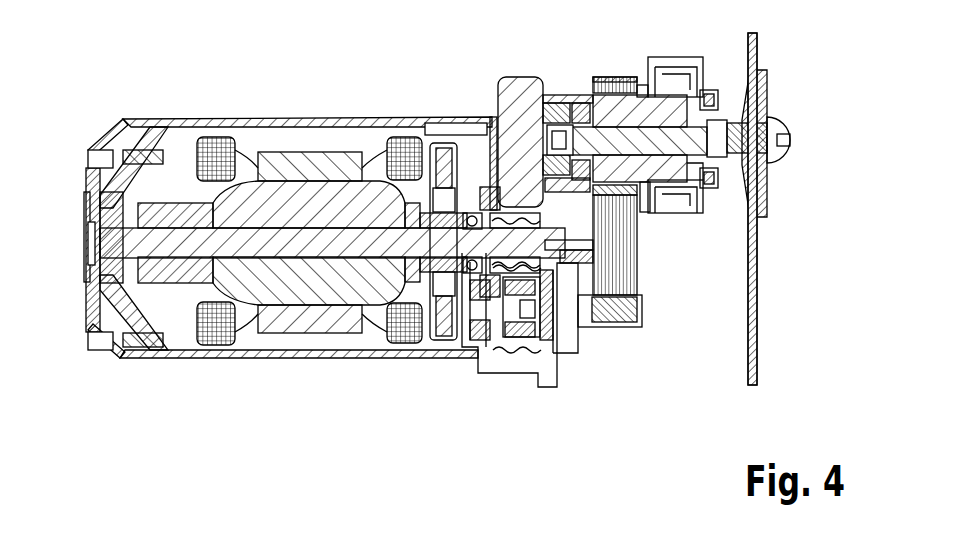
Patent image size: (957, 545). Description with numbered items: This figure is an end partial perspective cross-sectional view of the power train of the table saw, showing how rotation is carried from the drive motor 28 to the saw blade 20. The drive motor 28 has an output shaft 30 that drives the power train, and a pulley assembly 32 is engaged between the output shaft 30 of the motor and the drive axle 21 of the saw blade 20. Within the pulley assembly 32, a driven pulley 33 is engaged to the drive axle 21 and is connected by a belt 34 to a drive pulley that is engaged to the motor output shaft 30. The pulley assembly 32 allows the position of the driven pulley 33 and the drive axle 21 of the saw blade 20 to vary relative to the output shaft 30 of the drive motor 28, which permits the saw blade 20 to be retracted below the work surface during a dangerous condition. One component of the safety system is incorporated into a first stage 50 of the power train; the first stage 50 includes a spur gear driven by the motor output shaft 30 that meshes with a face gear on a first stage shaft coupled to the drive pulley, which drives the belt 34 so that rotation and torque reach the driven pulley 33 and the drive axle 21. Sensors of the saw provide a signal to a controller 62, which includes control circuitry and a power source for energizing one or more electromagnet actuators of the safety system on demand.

The saw blade 20 is at (757, 252).
The drive axle 21 is at (711, 130).
The drive motor 28 is at (258, 121).
The output shaft 30 is at (607, 327).
The pulley assembly 32 is at (662, 278).
The driven pulley 33 is at (614, 78).
The belt 34 is at (634, 239).
The first stage 50 is at (580, 372).
The controller 62 is at (476, 80).